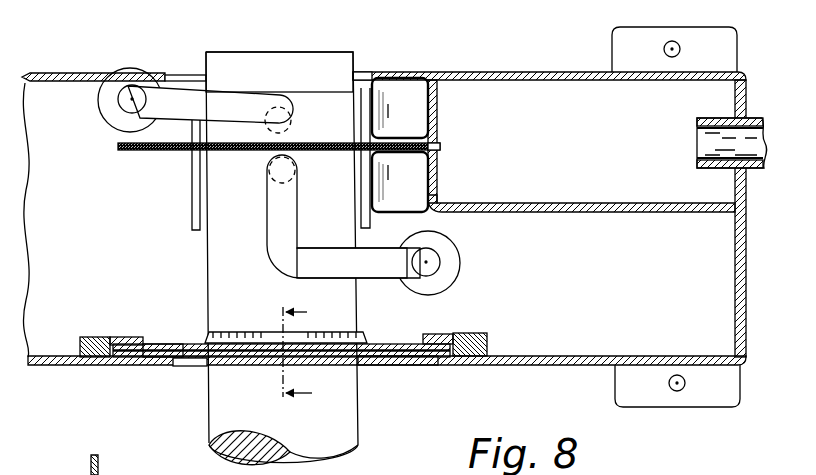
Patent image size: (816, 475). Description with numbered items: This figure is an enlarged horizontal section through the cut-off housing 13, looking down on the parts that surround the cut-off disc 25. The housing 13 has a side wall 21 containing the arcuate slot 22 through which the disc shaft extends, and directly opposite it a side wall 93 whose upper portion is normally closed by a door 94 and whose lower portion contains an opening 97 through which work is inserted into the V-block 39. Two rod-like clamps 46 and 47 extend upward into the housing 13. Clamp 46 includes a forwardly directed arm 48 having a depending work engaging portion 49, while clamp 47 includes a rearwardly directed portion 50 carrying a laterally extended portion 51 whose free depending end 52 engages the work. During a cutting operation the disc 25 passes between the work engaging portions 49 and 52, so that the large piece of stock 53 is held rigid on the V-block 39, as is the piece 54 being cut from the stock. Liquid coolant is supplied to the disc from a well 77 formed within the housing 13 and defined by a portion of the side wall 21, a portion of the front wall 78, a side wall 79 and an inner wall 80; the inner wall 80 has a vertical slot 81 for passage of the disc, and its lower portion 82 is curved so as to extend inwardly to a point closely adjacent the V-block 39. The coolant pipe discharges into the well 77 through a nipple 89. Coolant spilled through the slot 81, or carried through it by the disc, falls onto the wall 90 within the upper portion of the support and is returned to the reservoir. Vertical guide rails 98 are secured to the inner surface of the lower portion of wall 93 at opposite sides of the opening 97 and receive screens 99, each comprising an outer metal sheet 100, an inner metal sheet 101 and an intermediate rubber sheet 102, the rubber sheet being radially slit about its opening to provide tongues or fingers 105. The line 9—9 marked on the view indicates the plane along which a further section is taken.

The housing 13 is at (486, 60).
The side wall 21 is at (416, 73).
The arcuate slot 22 is at (378, 75).
The cut-off disc 25 is at (122, 157).
The V-block 39 is at (192, 213).
The clamp 46 is at (222, 78).
The clamp 47 is at (258, 241).
The forwardly directed arm 48 is at (233, 100).
The work engaging portion 49 is at (292, 130).
The rearwardly directed portion 50 is at (335, 257).
The laterally extended portion 51 is at (275, 207).
The free depending end 52 is at (292, 172).
The piece of stock 53 is at (352, 432).
The piece being cut 54 is at (338, 57).
The well 77 is at (538, 100).
The front wall 78 is at (743, 98).
The side wall 79 is at (618, 209).
The inner wall 80 is at (437, 110).
The vertical slot 81 is at (438, 149).
The lower portion 82 is at (428, 205).
The nipple 89 is at (697, 143).
The wall 90 is at (543, 337).
The side wall 93 is at (598, 357).
The door 94 is at (112, 474).
The opening 97 is at (385, 366).
The guide rails 98 is at (92, 337).
The screens 99 is at (152, 332).
The outer metal sheet 100 is at (184, 366).
The inner metal sheet 101 is at (175, 353).
The rubber sheet 102 is at (165, 345).
The tongues or fingers 105 is at (244, 333).
The section line 9- 9 is at (305, 352).